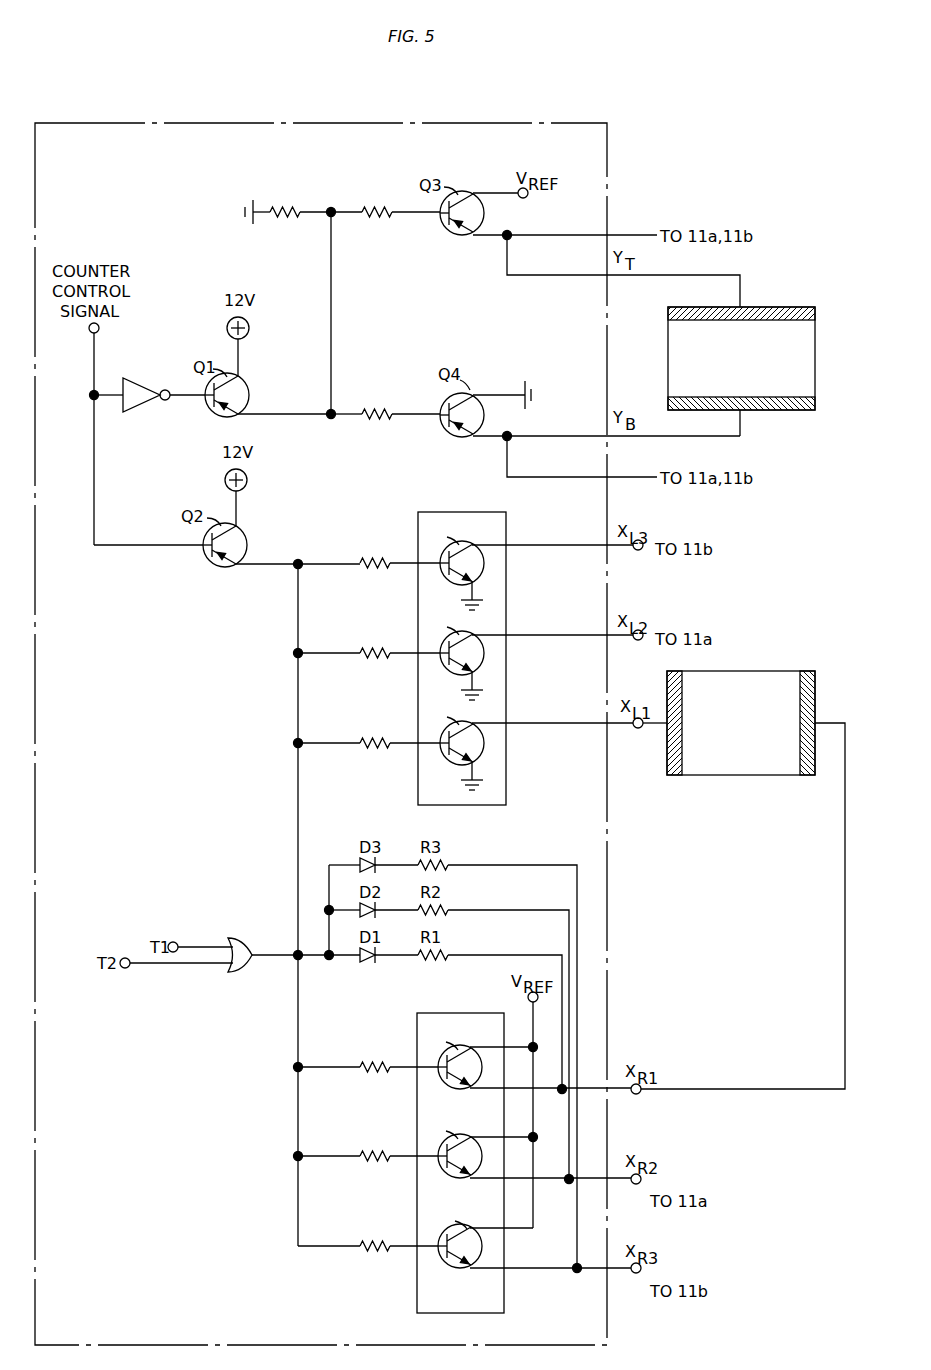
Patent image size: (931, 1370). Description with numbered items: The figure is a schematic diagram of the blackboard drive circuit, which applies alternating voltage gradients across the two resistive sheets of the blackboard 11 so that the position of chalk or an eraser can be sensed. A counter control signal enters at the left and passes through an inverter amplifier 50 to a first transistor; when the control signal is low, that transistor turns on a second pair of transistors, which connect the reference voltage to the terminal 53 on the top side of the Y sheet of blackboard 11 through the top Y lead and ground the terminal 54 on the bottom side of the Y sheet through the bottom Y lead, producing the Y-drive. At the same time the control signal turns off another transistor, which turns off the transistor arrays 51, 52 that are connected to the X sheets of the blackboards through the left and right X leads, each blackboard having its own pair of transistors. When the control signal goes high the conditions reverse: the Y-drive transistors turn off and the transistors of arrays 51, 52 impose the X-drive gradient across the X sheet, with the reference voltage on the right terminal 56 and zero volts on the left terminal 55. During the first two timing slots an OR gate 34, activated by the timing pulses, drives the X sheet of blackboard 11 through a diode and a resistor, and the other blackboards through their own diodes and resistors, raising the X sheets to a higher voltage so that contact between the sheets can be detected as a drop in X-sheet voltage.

The blackboard 11 is at (668, 364).
The OR gate 34 is at (242, 946).
The inverter amplifier 50 is at (134, 394).
The transistor array 51 is at (466, 512).
The transistor array 52 is at (455, 1013).
The terminal on the top side of the Y sheet 53 is at (770, 307).
The terminal on the bottom side of the Y sheet 54 is at (781, 400).
The left terminal of the X sheet 55 is at (681, 776).
The right terminal of the X sheet 56 is at (804, 777).